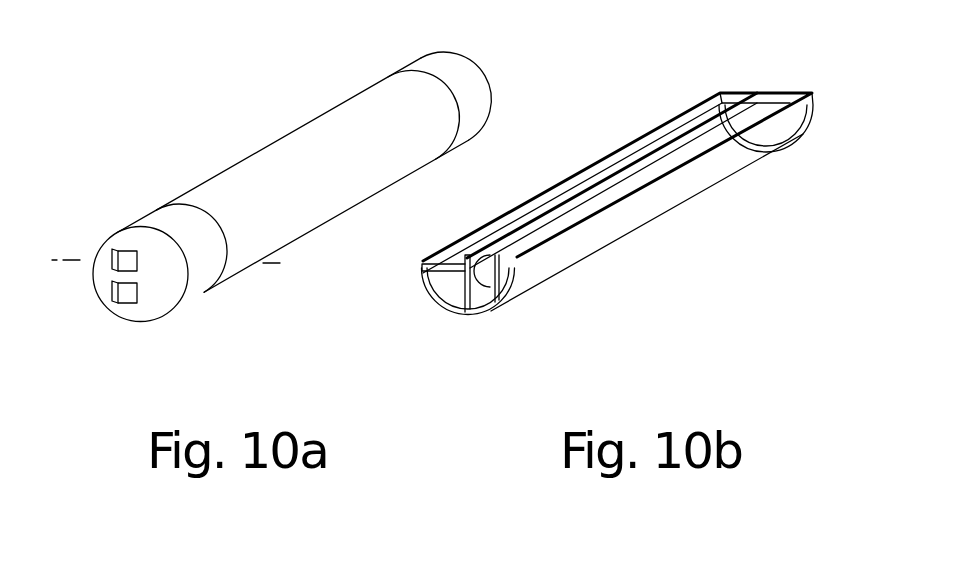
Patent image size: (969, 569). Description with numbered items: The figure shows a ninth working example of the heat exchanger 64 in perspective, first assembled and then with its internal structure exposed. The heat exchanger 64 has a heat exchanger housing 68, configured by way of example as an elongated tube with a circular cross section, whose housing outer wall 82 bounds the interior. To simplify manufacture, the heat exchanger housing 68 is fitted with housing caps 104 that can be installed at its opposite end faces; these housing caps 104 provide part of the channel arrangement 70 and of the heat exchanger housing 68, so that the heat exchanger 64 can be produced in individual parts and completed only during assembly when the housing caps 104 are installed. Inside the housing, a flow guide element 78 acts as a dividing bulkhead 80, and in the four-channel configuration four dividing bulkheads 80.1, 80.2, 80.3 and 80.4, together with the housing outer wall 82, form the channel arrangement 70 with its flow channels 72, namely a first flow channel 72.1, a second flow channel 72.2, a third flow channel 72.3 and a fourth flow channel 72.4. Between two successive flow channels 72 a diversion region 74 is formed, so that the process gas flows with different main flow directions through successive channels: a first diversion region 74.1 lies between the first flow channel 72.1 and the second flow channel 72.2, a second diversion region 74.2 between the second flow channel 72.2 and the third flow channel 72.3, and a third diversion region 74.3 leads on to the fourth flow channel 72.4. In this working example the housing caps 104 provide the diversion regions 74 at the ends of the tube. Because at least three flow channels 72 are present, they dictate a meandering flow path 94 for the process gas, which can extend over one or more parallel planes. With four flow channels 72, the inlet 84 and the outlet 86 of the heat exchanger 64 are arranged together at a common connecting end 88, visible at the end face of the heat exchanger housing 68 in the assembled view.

In FIG. 10A, the heat exchanger 64 is at (257, 115).
In FIG. 10B, the heat exchanger 64 is at (658, 110).
In FIG. 10A, the heat exchanger housing 68 is at (367, 88).
In FIG. 10B, the channel arrangement 70 is at (680, 126).
In FIG. 10B, the flow channels 72 is at (668, 128).
In FIG. 10B, the first flow channel 72.1 is at (498, 240).
In FIG. 10B, the second flow channel 72.2 is at (708, 150).
In FIG. 10B, the third flow channel 72.3 is at (509, 284).
In FIG. 10B, the fourth flow channel 72.4 is at (422, 301).
In FIG. 10B, the diversion region 74 is at (747, 92).
In FIG. 10B, the first diversion region 74.1 is at (795, 92).
In FIG. 10B, the second diversion region 74.2 is at (509, 306).
In FIG. 10B, the third diversion region 74.3 is at (815, 110).
In FIG. 10B, the flow guide element 78 is at (565, 195).
In FIG. 10B, the dividing bulkhead 80 is at (545, 215).
In FIG. 10B, the first dividing bulkhead 80.1 is at (590, 180).
In FIG. 10B, the second dividing bulkhead 80.2 is at (520, 262).
In FIG. 10B, the third dividing bulkhead 80.3 is at (470, 318).
In FIG. 10B, the fourth dividing bulkhead 80.4 is at (424, 266).
In FIG. 10A, the housing outer wall 82 is at (346, 100).
In FIG. 10A, the inlet 84 is at (112, 262).
In FIG. 10A, the outlet 86 is at (112, 291).
In FIG. 10A, the connecting end 88 is at (175, 316).
In FIG. 10B, the connecting end 88 is at (508, 328).
In FIG. 10B, the meandering flow path 94 is at (468, 246).
In FIG. 10A, the housing caps 104 is at (137, 221).
In FIG. 10B, the housing caps 104 is at (727, 90).